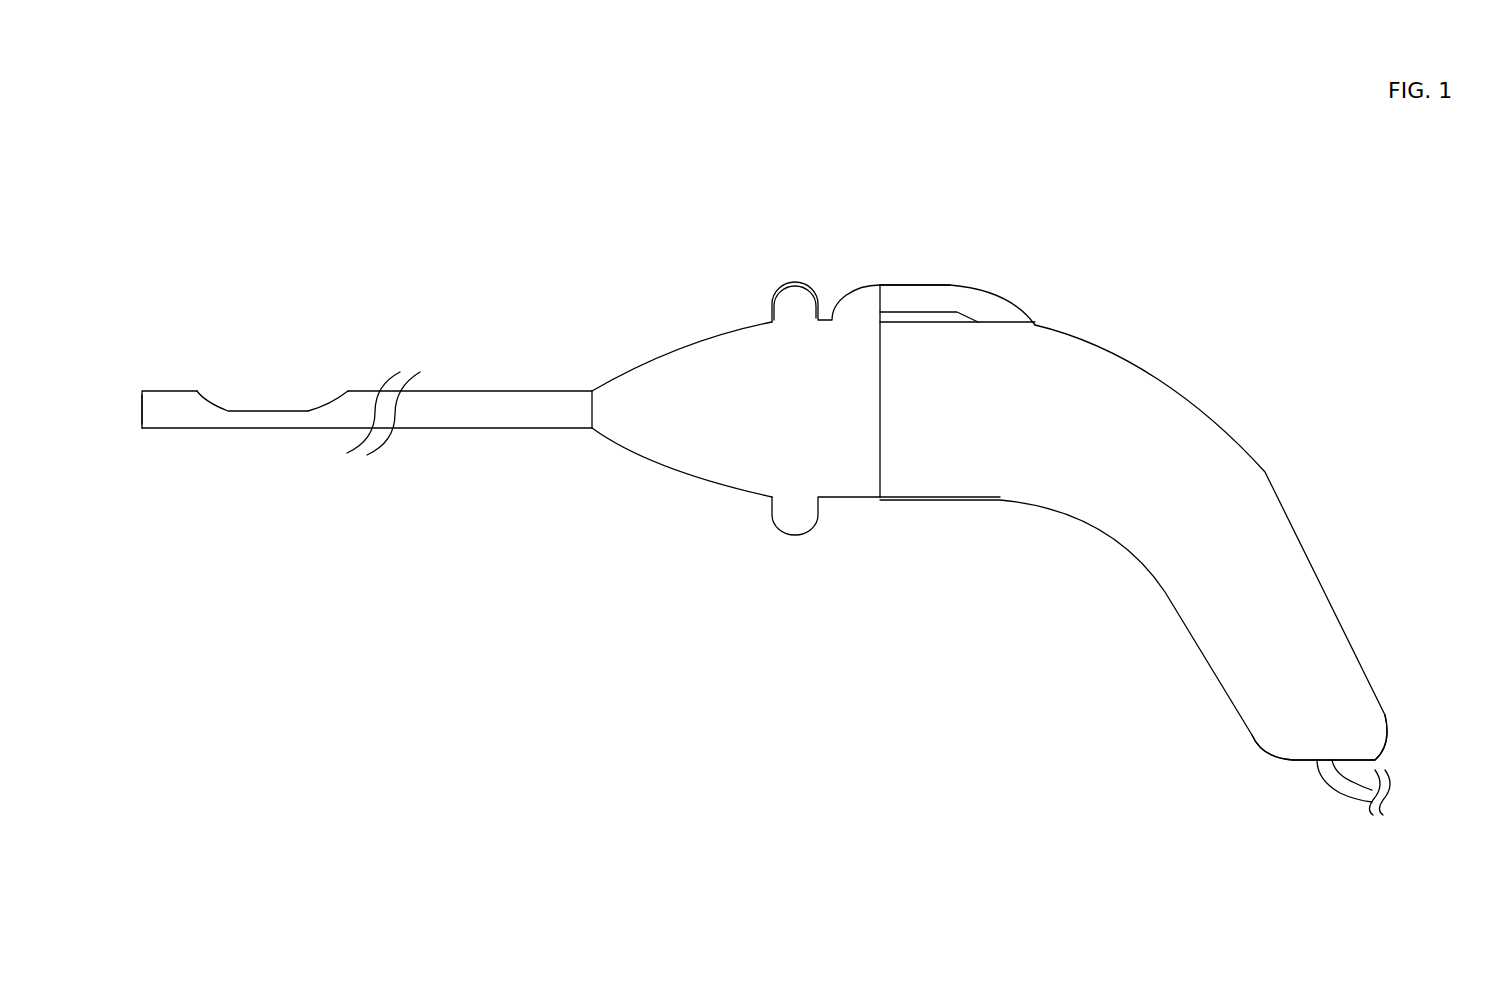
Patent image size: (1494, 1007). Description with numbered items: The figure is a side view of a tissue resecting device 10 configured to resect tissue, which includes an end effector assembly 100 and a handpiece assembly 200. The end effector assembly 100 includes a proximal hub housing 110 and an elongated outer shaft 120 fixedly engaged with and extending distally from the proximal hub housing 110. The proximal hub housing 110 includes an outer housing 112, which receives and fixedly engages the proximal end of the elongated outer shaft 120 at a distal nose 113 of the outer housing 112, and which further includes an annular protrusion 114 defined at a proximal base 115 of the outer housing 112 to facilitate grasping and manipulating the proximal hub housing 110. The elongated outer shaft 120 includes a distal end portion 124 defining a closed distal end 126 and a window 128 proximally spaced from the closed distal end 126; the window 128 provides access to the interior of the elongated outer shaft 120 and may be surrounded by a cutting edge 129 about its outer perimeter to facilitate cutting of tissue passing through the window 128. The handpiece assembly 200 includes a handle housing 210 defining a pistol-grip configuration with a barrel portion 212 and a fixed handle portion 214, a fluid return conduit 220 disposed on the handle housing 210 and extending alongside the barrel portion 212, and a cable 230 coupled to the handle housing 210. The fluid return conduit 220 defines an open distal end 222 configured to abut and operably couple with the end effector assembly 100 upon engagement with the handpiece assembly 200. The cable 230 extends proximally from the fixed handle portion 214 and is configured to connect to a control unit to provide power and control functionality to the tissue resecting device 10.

The tissue resecting device 10 is at (742, 86).
The end effector assembly 100 is at (831, 541).
The proximal hub housing 110 is at (730, 390).
The outer housing 112 is at (688, 440).
The distal nose 113 is at (610, 393).
The annular protrusion 114 is at (794, 295).
The proximal base 115 is at (847, 482).
The elongated outer shaft 120 is at (475, 407).
The distal end portion 124 is at (168, 393).
The closed distal end 126 is at (143, 403).
The window 128 is at (267, 405).
The cutting edge 129 is at (308, 408).
The handpiece assembly 200 is at (1405, 268).
The handle housing 210 is at (1177, 455).
The barrel portion 212 is at (928, 478).
The fixed handle portion 214 is at (1350, 677).
The fluid return conduit 220 is at (983, 307).
The open distal end 222 is at (880, 302).
The cable 230 is at (1347, 783).